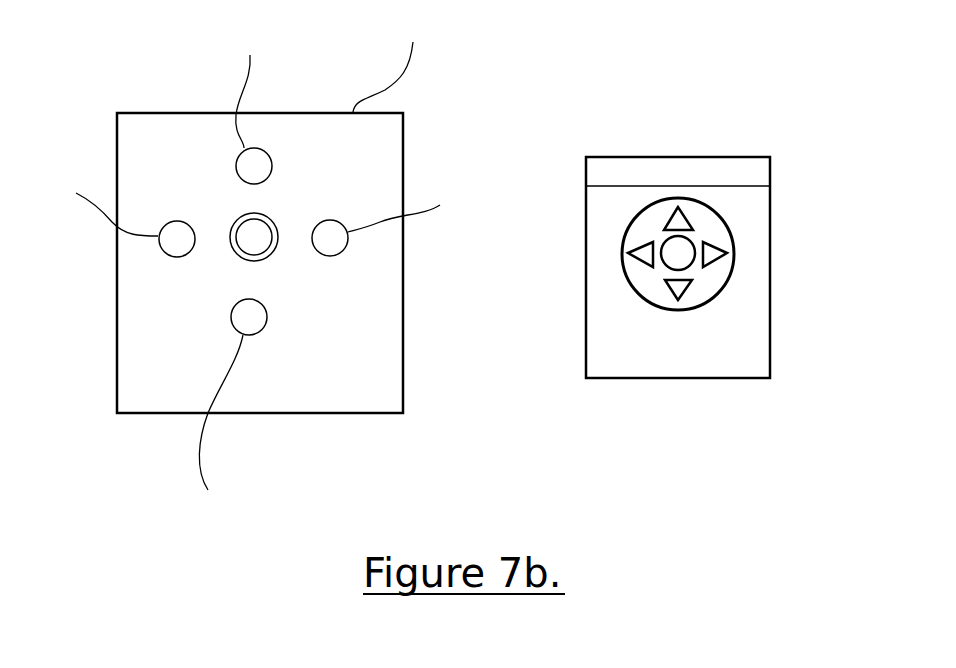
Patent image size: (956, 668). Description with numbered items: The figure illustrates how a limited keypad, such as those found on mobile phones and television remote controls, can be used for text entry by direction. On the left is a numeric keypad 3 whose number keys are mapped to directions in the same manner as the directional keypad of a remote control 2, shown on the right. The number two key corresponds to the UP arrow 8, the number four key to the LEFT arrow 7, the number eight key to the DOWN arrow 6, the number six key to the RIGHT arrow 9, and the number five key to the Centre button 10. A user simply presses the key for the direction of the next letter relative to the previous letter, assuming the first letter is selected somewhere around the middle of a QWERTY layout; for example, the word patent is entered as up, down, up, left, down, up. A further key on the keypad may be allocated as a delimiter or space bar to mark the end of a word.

The remote control 2 is at (628, 156).
The numeric keypad 3 is at (263, 261).
The DOWN arrow 6 is at (688, 291).
The LEFT arrow 7 is at (627, 250).
The UP arrow 8 is at (678, 207).
The RIGHT arrow 9 is at (712, 246).
The Centre button 10 is at (665, 262).